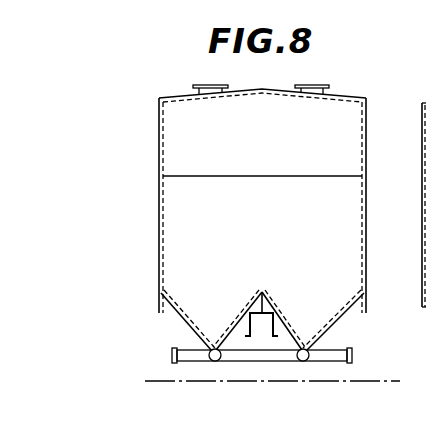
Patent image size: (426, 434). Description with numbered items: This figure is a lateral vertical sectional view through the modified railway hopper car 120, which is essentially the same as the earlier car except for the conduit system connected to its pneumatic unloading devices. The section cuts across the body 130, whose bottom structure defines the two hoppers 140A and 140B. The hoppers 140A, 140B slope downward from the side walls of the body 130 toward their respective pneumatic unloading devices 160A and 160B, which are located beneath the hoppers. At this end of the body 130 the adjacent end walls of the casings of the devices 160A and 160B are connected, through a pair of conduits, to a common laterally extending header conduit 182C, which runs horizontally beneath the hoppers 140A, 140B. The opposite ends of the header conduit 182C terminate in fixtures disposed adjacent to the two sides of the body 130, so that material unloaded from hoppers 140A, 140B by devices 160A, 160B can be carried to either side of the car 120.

The railway hopper car 120 is at (156, 153).
The body 130 is at (372, 240).
The hopper 140A is at (204, 311).
The hopper 140B is at (314, 311).
The pneumatic unloading device 160A is at (215, 362).
The pneumatic unloading device 160B is at (303, 362).
The header conduit 182C is at (244, 357).